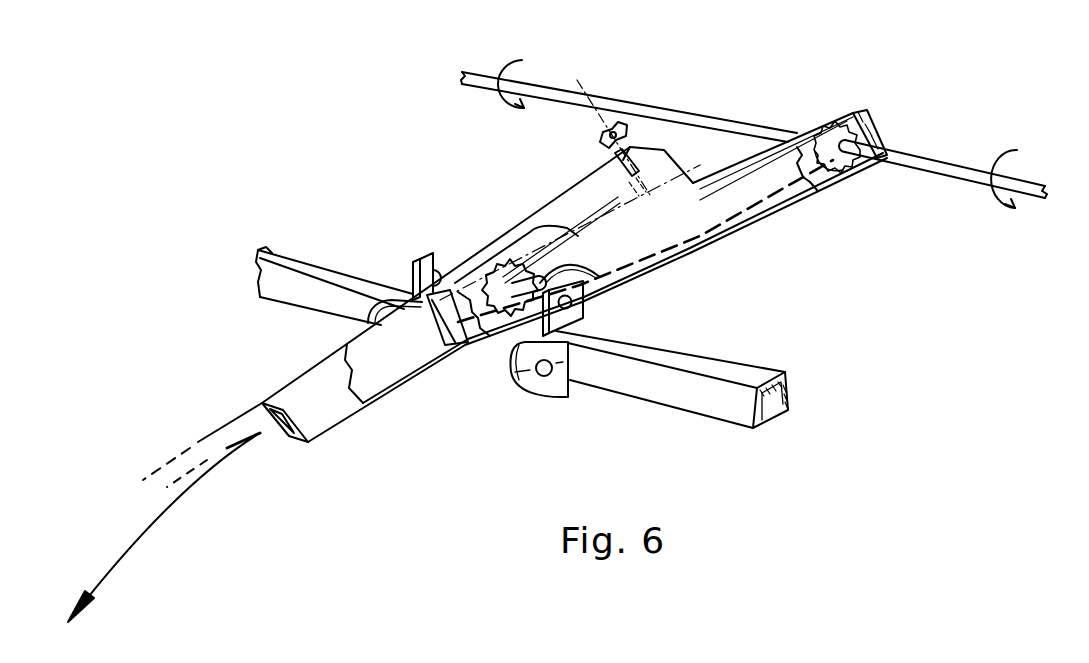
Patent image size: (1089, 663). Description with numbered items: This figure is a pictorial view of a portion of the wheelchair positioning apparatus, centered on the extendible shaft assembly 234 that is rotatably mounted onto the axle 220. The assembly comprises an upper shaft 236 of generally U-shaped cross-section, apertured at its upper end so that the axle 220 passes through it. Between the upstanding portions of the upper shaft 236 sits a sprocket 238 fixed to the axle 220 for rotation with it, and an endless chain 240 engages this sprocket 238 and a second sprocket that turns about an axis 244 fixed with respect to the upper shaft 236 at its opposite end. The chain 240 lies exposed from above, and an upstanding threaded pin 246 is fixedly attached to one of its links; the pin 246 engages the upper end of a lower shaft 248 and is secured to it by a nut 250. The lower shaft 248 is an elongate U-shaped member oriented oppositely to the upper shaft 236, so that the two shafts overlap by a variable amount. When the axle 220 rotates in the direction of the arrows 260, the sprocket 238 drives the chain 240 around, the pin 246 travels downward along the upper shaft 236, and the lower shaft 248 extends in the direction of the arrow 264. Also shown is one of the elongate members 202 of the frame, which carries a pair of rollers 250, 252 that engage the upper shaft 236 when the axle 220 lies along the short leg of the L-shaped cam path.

The elongate member 202 is at (640, 382).
The axle 220 is at (933, 165).
The extendible shaft assembly 234 is at (802, 214).
The upper shaft 236 is at (823, 178).
The sprocket 238 is at (862, 132).
The endless chain 240 is at (666, 252).
The axis 244 is at (487, 318).
The threaded pin 246 is at (617, 160).
The lower shaft 248 is at (563, 212).
The nut 250 is at (600, 142).
The roller 252 is at (583, 268).
The arrows 260 is at (500, 55).
The arrow 264 is at (230, 425).